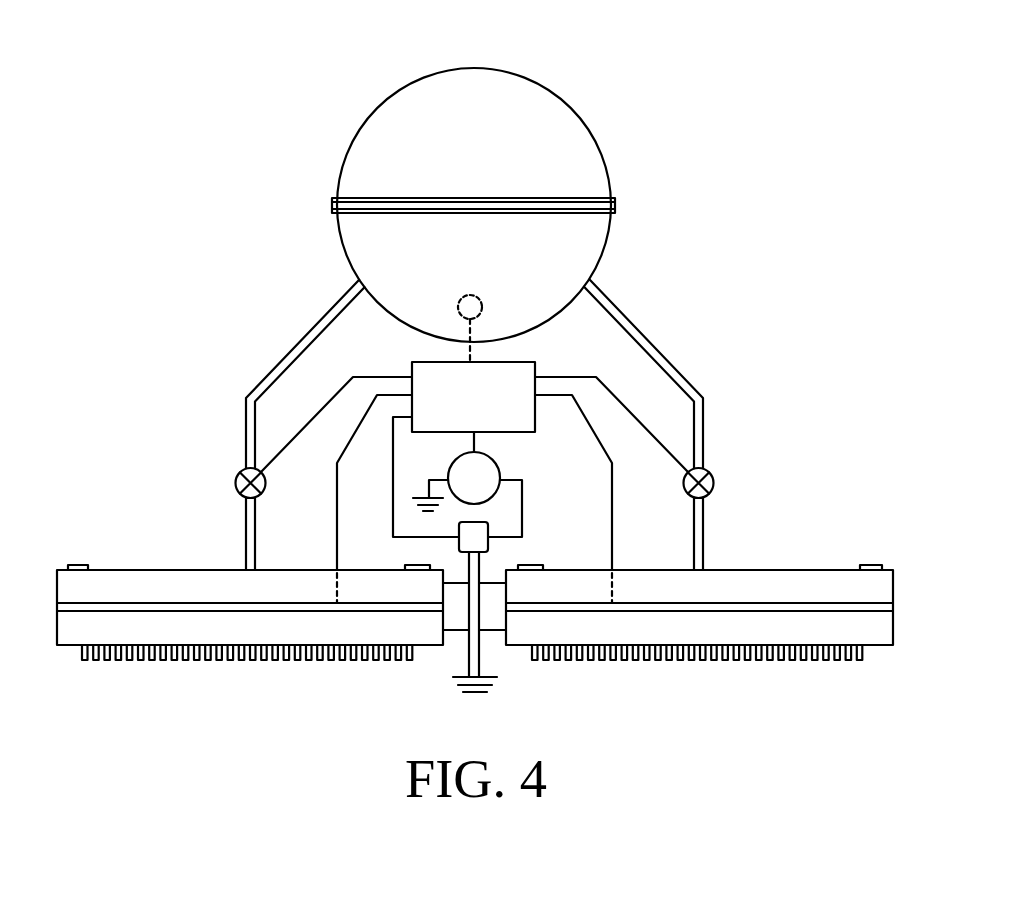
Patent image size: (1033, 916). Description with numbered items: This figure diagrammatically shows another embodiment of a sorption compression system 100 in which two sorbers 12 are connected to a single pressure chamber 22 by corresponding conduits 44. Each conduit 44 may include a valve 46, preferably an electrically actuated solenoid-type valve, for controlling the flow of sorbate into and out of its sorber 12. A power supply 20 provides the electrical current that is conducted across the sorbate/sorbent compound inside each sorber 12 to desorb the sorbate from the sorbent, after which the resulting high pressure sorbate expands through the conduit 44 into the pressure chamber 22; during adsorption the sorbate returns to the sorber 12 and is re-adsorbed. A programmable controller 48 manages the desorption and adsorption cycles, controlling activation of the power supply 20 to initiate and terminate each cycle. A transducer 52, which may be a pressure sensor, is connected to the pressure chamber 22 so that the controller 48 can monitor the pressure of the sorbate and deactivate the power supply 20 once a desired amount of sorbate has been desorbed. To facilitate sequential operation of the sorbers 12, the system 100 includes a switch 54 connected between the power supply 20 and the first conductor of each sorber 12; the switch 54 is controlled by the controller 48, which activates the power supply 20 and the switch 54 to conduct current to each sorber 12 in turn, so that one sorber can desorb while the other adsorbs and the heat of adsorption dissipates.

The sorption compression system 100 is at (647, 93).
The pressure chamber 22 is at (491, 157).
The transducer 52 is at (481, 298).
The programmable controller 48 is at (491, 413).
The power supply 20 is at (491, 492).
The switch 54 is at (485, 522).
The conduit 44 is at (313, 330).
The valve 46 is at (238, 476).
The sorber 12 is at (165, 569).